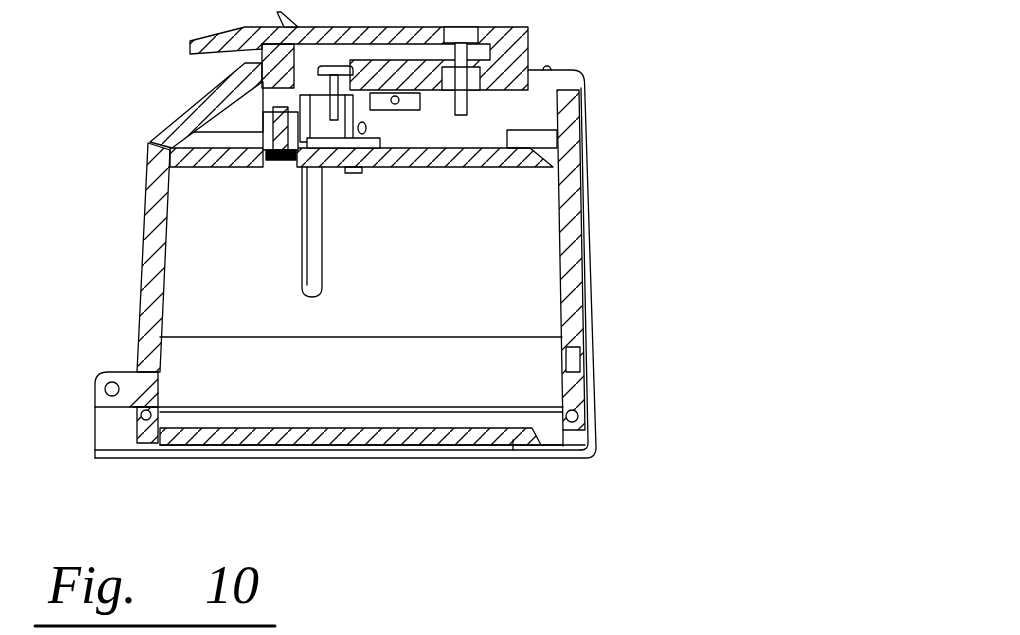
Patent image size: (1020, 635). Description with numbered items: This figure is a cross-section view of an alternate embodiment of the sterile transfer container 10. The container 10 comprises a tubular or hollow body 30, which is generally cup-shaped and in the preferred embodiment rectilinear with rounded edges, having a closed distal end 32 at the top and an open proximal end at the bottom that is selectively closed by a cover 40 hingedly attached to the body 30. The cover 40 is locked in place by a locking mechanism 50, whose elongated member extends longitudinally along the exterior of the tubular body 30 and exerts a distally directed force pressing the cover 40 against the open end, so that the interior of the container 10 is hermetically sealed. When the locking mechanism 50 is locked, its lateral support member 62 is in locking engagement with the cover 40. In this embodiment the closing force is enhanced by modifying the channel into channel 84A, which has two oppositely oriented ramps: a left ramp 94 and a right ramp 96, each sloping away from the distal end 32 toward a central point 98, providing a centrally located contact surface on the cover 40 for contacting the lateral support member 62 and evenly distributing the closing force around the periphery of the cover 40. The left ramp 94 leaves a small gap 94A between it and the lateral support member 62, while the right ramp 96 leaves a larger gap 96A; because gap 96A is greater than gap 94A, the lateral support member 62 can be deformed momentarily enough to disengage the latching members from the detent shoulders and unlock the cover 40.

The sterile transfer container 10 is at (150, 153).
The tubular body 30 is at (143, 244).
The closed distal end 32 is at (197, 108).
The cover 40 is at (154, 433).
The locking mechanism 50 is at (598, 404).
The lateral support member 62 is at (418, 459).
The channel 84A is at (567, 446).
The left ramp 94 is at (197, 458).
The small gap 94A is at (133, 453).
The right ramp 96 is at (513, 441).
The larger gap 96A is at (547, 448).
The central point 98 is at (357, 459).